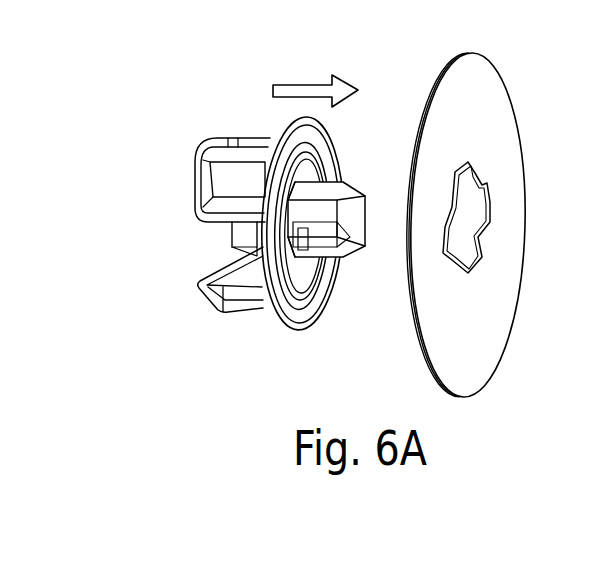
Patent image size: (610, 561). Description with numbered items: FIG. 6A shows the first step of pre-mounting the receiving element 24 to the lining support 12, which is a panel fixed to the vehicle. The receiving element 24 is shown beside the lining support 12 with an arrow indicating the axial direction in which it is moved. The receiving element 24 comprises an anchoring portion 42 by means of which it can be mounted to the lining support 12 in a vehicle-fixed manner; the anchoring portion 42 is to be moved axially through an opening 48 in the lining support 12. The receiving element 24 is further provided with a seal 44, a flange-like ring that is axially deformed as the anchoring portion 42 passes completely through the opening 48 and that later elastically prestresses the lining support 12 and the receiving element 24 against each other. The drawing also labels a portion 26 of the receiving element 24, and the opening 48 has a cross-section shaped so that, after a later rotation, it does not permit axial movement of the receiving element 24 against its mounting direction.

The lining support 12 is at (482, 97).
The receiving element 24 is at (238, 138).
The lower retaining arm 26 is at (203, 243).
The anchoring portion 42 is at (355, 267).
The seal 44 is at (318, 328).
The opening 48 is at (472, 208).